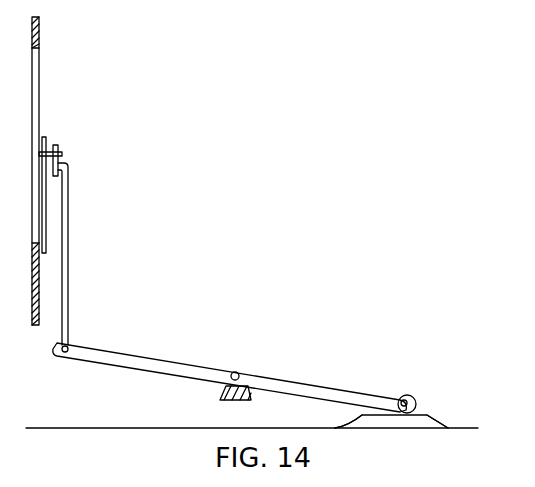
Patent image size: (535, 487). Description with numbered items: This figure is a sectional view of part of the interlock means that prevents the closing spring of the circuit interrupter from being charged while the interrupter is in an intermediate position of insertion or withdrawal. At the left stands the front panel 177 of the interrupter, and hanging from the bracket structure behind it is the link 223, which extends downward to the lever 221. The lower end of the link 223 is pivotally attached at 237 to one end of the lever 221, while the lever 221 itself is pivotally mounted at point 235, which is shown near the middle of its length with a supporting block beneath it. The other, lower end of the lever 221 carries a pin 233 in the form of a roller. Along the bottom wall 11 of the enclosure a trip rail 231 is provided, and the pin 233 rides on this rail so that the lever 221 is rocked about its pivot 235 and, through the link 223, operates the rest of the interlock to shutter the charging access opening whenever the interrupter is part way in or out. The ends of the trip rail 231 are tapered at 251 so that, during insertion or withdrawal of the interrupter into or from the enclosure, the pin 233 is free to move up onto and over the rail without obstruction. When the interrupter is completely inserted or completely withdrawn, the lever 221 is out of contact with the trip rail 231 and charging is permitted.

The bottom wall 11 is at (201, 427).
The front panel 177 is at (39, 72).
The link 223 is at (68, 236).
The pivotal attachment point 237 is at (72, 347).
The lever 221 is at (141, 358).
The pivot point 235 is at (236, 372).
The pin 233 is at (408, 394).
The trip rail 231 is at (367, 420).
The tapered ends 251 is at (342, 425).